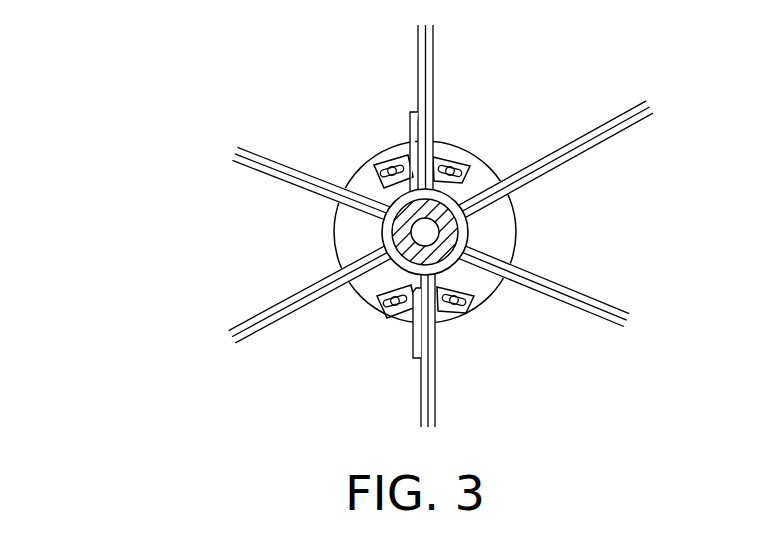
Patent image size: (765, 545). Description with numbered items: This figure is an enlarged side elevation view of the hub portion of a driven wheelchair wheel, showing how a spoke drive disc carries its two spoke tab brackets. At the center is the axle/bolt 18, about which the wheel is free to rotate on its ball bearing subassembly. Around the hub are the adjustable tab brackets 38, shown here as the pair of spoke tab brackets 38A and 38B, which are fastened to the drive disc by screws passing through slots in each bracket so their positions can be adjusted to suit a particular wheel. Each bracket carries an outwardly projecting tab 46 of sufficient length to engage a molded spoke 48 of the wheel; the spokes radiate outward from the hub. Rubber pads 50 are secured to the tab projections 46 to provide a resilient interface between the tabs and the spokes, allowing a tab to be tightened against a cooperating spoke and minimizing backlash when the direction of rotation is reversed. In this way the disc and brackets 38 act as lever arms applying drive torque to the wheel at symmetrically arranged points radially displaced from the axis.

The axle/bolt 18 is at (430, 239).
The adjustable tab brackets 38 is at (514, 206).
The spoke tab bracket 38A is at (464, 158).
The spoke tab bracket 38B is at (468, 306).
The outwardly projecting tab 46 is at (416, 111).
The molded spoke 48 is at (290, 327).
The rubber pads 50 is at (411, 119).